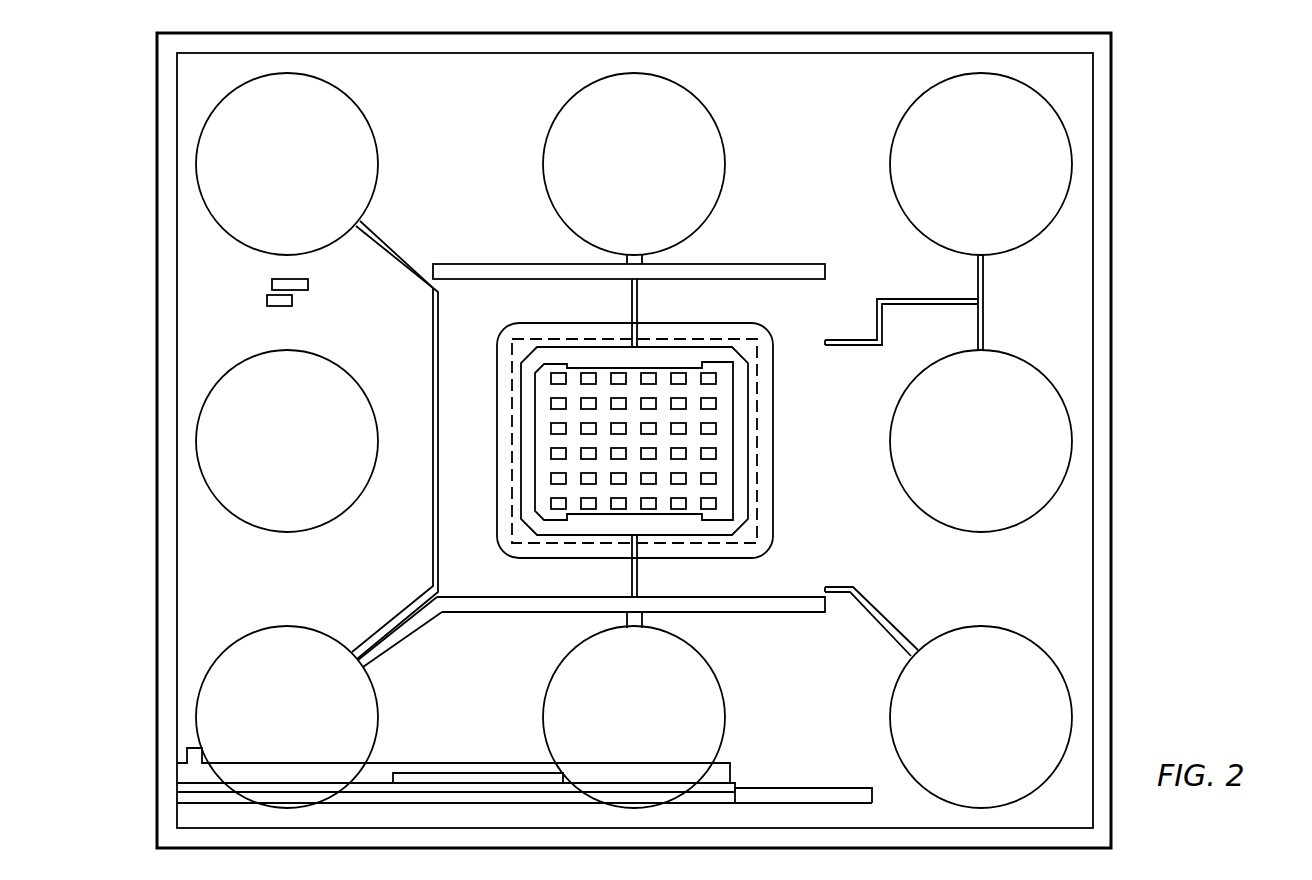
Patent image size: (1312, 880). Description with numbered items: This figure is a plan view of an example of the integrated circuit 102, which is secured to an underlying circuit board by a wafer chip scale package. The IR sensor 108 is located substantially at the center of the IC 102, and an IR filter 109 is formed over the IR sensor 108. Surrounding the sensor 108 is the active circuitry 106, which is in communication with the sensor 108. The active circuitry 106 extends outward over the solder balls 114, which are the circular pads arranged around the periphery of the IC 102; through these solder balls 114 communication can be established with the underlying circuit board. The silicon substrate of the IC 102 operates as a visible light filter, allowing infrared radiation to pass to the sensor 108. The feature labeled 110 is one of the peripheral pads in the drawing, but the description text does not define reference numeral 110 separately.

The integrated circuit 102 is at (1171, 141).
The active circuitry 106 is at (1045, 324).
The IR sensor 108 is at (757, 423).
The IR filter 109 is at (773, 478).
The contact pad 110 is at (883, 134).
The solder balls 114 is at (890, 729).